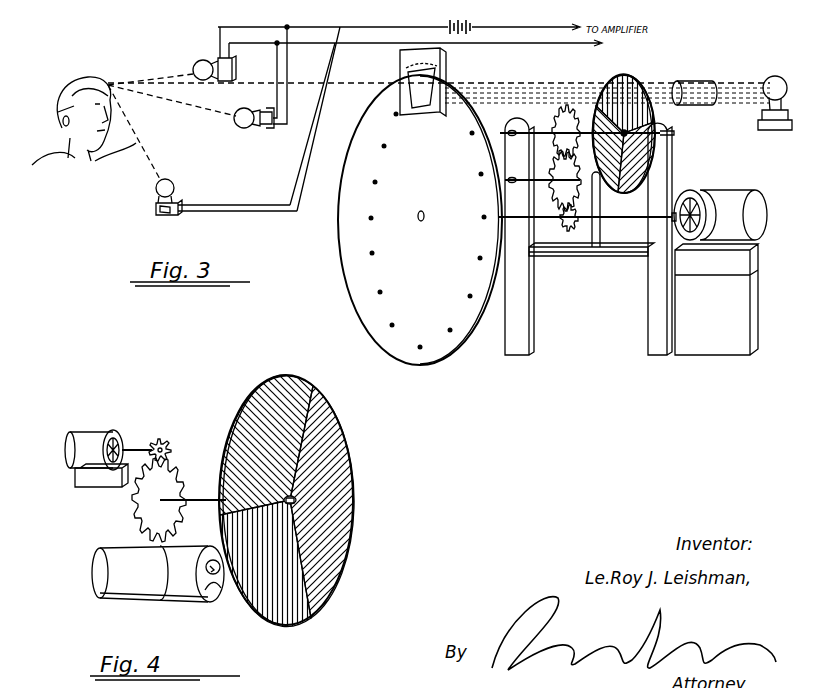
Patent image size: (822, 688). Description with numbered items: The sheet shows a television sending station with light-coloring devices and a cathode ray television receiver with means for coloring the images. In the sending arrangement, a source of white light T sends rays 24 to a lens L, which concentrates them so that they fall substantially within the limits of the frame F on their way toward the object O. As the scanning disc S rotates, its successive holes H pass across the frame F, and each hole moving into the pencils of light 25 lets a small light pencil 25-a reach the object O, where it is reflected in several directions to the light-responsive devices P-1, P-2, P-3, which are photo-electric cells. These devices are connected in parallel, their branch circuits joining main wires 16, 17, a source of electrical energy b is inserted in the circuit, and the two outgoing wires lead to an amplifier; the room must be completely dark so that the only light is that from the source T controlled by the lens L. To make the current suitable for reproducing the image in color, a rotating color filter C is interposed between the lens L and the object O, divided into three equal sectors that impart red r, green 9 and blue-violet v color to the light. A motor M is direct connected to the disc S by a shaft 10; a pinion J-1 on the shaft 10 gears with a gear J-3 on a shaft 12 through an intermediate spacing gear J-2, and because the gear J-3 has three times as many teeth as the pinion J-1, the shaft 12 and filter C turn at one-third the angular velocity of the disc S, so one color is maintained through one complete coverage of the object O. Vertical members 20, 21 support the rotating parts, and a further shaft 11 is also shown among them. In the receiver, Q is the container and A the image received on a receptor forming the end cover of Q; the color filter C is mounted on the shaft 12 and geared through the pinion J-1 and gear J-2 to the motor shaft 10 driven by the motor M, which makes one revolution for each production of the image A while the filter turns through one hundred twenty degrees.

In FIG. 3, the object O is at (86, 78).
In FIG. 3, the light-responsive device P-1 is at (175, 186).
In FIG. 3, the light-responsive device P-2 is at (245, 129).
In FIG. 3, the light-responsive device P-3 is at (195, 63).
In FIG. 3, the main wire 16 is at (375, 44).
In FIG. 3, the main wire 17 is at (366, 26).
In FIG. 3, the source of electrical energy b is at (460, 17).
In FIG. 3, the pencils of light 25 is at (538, 85).
In FIG. 3, the light pencil 25-a is at (350, 86).
In FIG. 3, the frame F is at (438, 82).
In FIG. 3, the scanning disc S is at (340, 239).
In FIG. 3, the holes H is at (385, 147).
In FIG. 3, the shaft 10 is at (418, 221).
In FIG. 4, the shaft 10 is at (138, 446).
In FIG. 3, the shaft 11 is at (548, 175).
In FIG. 3, the shaft 12 is at (511, 131).
In FIG. 4, the shaft 12 is at (205, 496).
In FIG. 3, the pinion J-1 is at (566, 226).
In FIG. 4, the pinion J-1 is at (171, 446).
In FIG. 3, the intermediate gear J-2 is at (558, 180).
In FIG. 4, the intermediate gear J-2 is at (144, 506).
In FIG. 3, the gear J-3 is at (558, 130).
In FIG. 3, the rotating color filter C is at (632, 80).
In FIG. 4, the rotating color filter C is at (325, 420).
In FIG. 3, the red sector r is at (612, 80).
In FIG. 4, the red sector r is at (297, 620).
In FIG. 3, the green sector 9 is at (602, 152).
In FIG. 4, the green sector 9 is at (250, 400).
In FIG. 3, the blue-violet sector v is at (650, 158).
In FIG. 4, the blue-violet sector v is at (353, 490).
In FIG. 3, the lens L is at (690, 80).
In FIG. 3, the rays 24 is at (728, 92).
In FIG. 3, the source of white light T is at (778, 76).
In FIG. 3, the motor M is at (718, 192).
In FIG. 4, the motor M is at (100, 432).
In FIG. 3, the vertical member 20 is at (531, 340).
In FIG. 3, the vertical member 21 is at (648, 342).
In FIG. 4, the container Q is at (108, 567).
In FIG. 4, the image A is at (222, 600).